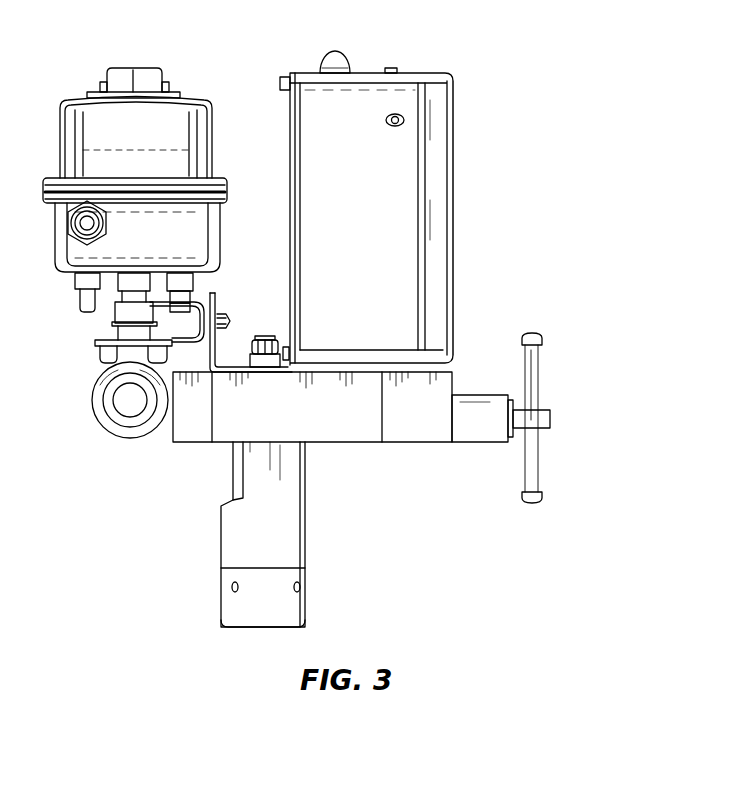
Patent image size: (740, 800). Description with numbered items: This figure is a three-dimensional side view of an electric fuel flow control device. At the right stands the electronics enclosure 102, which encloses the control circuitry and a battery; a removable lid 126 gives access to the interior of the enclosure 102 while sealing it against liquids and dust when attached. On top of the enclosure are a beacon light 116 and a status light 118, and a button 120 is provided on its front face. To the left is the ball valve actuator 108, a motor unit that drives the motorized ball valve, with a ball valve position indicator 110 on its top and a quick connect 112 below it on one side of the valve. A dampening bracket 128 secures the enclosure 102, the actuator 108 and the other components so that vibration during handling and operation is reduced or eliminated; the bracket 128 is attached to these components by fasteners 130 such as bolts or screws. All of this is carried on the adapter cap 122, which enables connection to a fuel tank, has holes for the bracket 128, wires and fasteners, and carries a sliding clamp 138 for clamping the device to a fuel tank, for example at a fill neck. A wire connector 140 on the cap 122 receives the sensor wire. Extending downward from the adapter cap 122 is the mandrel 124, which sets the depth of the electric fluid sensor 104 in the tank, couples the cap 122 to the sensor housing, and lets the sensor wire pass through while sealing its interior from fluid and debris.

The electronics enclosure 102 is at (290, 165).
The electric fluid sensor 104 is at (323, 598).
The ball valve actuator 108 is at (226, 86).
The ball valve position indicator 110 is at (145, 68).
The quick connect 112 is at (130, 438).
The beacon light 116 is at (332, 54).
The status light 118 is at (393, 68).
The button 120 is at (390, 128).
The adapter cap 122 is at (368, 442).
The mandrel 124 is at (307, 506).
The removable lid 126 is at (453, 215).
The dampening bracket 128 is at (217, 296).
The fasteners 130 is at (231, 321).
The sliding clamp 138 is at (550, 420).
The wire connector 140 is at (270, 336).